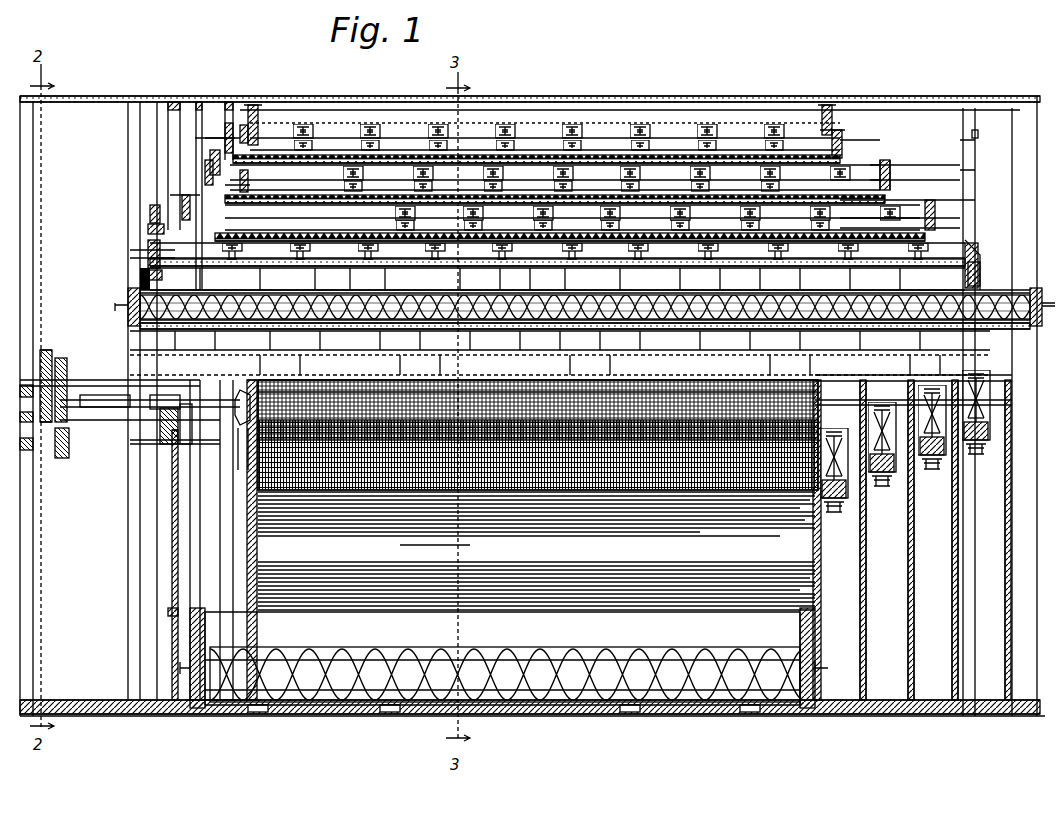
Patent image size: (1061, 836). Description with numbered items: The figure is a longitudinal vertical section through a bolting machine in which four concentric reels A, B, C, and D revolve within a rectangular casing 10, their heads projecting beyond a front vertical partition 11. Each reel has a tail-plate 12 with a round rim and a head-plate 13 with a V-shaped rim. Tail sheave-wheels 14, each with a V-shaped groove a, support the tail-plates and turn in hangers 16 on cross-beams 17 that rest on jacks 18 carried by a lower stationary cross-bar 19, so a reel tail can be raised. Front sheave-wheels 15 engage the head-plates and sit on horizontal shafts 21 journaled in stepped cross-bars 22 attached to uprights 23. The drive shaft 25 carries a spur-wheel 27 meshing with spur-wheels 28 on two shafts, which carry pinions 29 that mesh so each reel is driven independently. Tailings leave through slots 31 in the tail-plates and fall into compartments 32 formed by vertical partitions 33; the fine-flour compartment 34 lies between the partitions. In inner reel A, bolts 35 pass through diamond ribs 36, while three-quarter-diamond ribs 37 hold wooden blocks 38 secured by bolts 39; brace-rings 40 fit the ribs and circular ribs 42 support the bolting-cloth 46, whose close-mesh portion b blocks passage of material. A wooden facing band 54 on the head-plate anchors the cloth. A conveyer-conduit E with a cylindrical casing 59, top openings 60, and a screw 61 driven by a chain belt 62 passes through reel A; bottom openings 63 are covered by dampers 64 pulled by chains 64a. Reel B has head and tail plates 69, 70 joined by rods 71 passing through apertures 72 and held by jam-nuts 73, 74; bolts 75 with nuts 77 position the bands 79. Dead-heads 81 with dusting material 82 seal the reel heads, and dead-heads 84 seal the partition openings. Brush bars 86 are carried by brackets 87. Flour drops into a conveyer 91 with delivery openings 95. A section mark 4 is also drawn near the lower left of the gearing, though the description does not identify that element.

The casing 10 is at (985, 250).
The front vertical partition 11 is at (223, 540).
The tail-plate 12 is at (800, 518).
The head-plate 13 is at (257, 490).
The sheave-wheel 14 is at (990, 378).
The front sheave-wheel 15 is at (170, 440).
The hanger 16 is at (990, 416).
The cross-beam 17 is at (990, 440).
The jack 18 is at (850, 515).
The lower stationary cross-bar 19 is at (836, 520).
The horizontal shaft 21 is at (100, 408).
The stepped cross-bar 22 is at (160, 430).
The upright 23 is at (200, 150).
The main or drive shaft 25 is at (30, 380).
The spur-wheel 27 is at (70, 373).
The spur-wheel 28 is at (50, 363).
The pinion 29 is at (60, 470).
The slot 31 is at (892, 170).
The pocket or compartment 32 is at (980, 658).
The vertical partition 33 is at (915, 565).
The compartment 34 is at (536, 574).
The bolt 35 is at (148, 273).
The rib 36 is at (148, 228).
The rib 37 is at (472, 340).
The block 38 is at (560, 340).
The bolt 39 is at (130, 338).
The brace-ring 40 is at (557, 278).
The circular rib 42 is at (559, 277).
The bolting-cloth 46 is at (400, 492).
The facing band 54 is at (160, 213).
The cylindrical casing 59 is at (330, 277).
The opening 60 is at (138, 278).
The screw 61 is at (407, 340).
The chain belt 62 is at (110, 300).
The opening 63 is at (612, 335).
The damper 64 is at (560, 352).
The chain or rope 64a is at (530, 358).
The head-plate 69 is at (235, 123).
The tail-plate 70 is at (888, 165).
The rod or tube 71 is at (498, 168).
The aperture 72 is at (232, 120).
The jam-nut 73 is at (215, 165).
The jam-nut 74 is at (820, 135).
The bolt 75 is at (407, 193).
The nut 77 is at (467, 173).
The circular rib or band 79 is at (570, 179).
The dead-head 81 is at (562, 277).
The dusting material 82 is at (538, 428).
The dead-head 84 is at (262, 115).
The bar 86 is at (566, 180).
The bracket 87 is at (587, 158).
The conveyer 91 is at (505, 648).
The opening 95 is at (268, 713).
The inner reel A is at (557, 266).
The second reel B is at (572, 217).
The third reel C is at (555, 177).
The outer reel D is at (545, 134).
The conveyer-conduit E is at (317, 295).
The peripheral groove a is at (232, 470).
The close-mesh cloth b is at (290, 330).
The shaft 4 is at (22, 458).